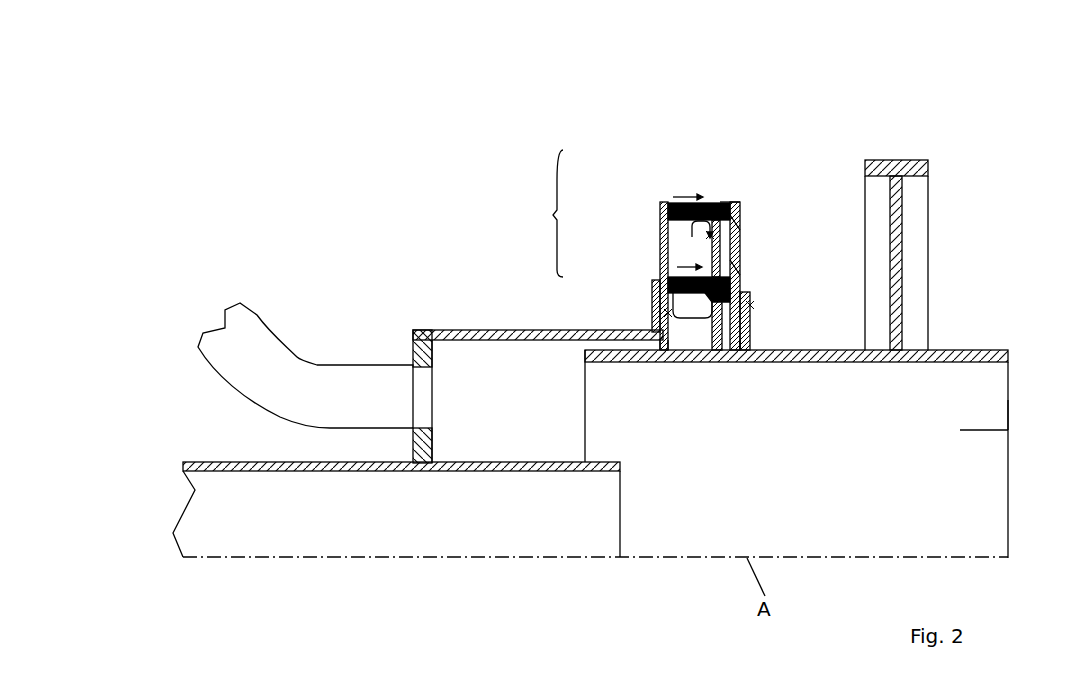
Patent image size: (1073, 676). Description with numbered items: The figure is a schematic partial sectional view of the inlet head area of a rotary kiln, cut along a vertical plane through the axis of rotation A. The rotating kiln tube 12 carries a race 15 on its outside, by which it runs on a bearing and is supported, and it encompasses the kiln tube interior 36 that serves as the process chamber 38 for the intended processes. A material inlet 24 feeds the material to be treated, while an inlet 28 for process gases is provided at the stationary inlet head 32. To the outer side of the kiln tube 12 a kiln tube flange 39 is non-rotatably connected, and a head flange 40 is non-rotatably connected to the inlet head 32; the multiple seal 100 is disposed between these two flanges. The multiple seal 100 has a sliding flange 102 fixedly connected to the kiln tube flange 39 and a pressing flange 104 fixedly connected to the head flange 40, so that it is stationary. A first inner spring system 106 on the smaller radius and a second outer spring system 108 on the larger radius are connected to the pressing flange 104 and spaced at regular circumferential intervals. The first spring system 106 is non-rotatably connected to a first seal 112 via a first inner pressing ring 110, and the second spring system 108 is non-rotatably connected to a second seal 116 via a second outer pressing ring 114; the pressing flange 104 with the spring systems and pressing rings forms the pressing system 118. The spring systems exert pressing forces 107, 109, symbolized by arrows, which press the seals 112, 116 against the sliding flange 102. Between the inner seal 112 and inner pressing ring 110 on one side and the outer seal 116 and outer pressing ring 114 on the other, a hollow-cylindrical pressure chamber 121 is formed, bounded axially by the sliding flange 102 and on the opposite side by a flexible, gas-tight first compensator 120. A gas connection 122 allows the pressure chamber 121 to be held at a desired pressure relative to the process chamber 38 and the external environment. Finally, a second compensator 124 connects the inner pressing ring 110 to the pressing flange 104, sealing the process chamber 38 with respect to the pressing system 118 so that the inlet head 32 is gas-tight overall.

The kiln tube 12 is at (1005, 420).
The race 15 is at (893, 160).
The material inlet 24 is at (209, 462).
The inlet 28 is at (270, 317).
The inlet head 32 is at (433, 178).
The kiln tube interior 36 is at (973, 430).
The process chamber 38 is at (862, 463).
The kiln tube flange 39 is at (752, 328).
The head flange 40 is at (652, 282).
The multiple seal 100 is at (762, 118).
The sliding flange 102 is at (737, 210).
The pressing flange 104 is at (662, 228).
The first inner spring system 106 is at (660, 266).
The spring or pressing force 107 is at (677, 267).
The second outer spring system 108 is at (683, 210).
The spring or pressing force 109 is at (673, 197).
The first inner pressing ring 110 is at (748, 293).
The first seal 112 is at (741, 267).
The second outer pressing ring 114 is at (742, 222).
The second seal 116 is at (723, 202).
The pressing system 118 is at (536, 213).
The first compensator 120 is at (736, 252).
The pressure chamber 121 is at (722, 248).
The gas connection 122 is at (690, 230).
The second compensator 124 is at (658, 325).